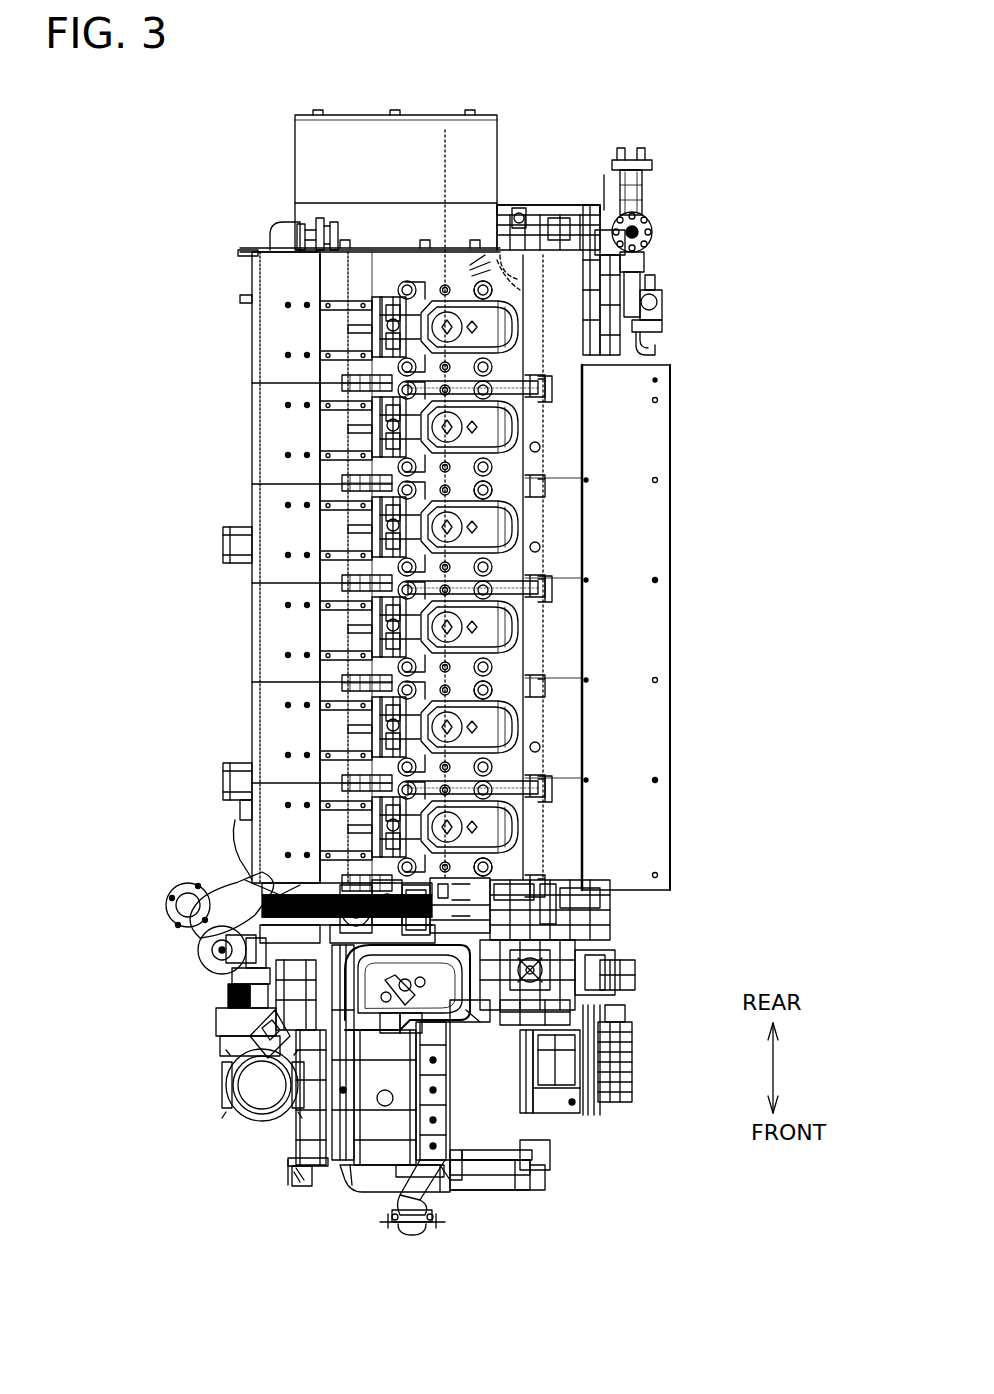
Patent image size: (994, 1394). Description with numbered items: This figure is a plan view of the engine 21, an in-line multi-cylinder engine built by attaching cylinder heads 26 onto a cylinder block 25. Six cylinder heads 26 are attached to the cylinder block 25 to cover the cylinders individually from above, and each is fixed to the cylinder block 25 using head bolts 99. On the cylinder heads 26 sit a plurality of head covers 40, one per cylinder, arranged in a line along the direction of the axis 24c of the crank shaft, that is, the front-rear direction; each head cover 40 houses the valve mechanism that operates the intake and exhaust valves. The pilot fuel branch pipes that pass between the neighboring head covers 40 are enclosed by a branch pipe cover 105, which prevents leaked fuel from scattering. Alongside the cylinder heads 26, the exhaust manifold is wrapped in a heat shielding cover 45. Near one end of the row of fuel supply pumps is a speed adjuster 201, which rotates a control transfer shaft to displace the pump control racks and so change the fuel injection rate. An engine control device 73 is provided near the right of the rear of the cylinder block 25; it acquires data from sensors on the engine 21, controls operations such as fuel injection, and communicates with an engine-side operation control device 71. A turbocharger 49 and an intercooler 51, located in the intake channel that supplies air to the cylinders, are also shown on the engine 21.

The engine 21 is at (762, 176).
The axis of the crank shaft 24c is at (455, 152).
The cylinder block 25 is at (368, 243).
The cylinder head 26 is at (495, 292).
The head cover 40 is at (505, 320).
The heat shielding cover 45 is at (268, 425).
The turbocharger 49 is at (305, 1152).
The intercooler 51 is at (362, 1188).
The engine-side operation control device 71 is at (563, 1105).
The engine control device 73 is at (347, 128).
The head bolt 99 is at (478, 262).
The branch pipe cover 105 is at (550, 388).
The speed adjuster 201 is at (575, 1025).